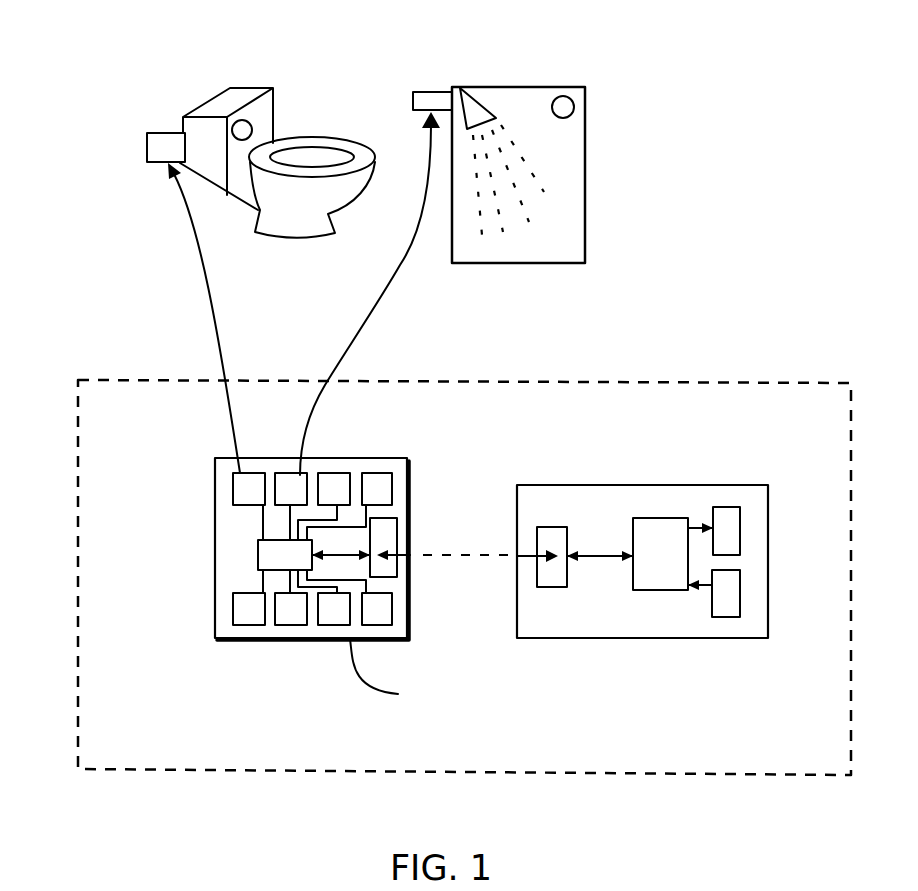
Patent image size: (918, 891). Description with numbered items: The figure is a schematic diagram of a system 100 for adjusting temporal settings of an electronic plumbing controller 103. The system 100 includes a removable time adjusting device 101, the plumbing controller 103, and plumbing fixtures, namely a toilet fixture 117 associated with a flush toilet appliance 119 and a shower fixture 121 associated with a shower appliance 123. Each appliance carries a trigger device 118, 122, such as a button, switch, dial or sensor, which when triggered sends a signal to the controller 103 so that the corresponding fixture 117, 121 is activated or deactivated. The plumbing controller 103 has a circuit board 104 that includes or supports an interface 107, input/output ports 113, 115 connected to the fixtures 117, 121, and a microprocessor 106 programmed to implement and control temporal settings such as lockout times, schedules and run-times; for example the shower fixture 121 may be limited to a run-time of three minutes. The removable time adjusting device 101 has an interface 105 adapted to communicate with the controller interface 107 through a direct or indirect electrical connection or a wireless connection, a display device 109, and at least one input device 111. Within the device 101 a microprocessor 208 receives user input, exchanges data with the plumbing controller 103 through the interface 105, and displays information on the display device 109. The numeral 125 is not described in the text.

The system 100 is at (750, 219).
The removable time adjusting device 101 is at (680, 587).
The electronic plumbing controller 103 is at (305, 607).
The circuit board 104 is at (224, 616).
The interface 105 is at (551, 538).
The microprocessor 106 is at (267, 563).
The interface 107 is at (386, 540).
The display device 109 is at (741, 528).
The input device 111 is at (741, 592).
The input/output port 113 is at (233, 494).
The input/output port 115 is at (283, 506).
The toilet fixture 117 is at (148, 163).
The trigger device 118 is at (252, 125).
The flush toilet appliance 119 is at (273, 88).
The shower fixture 121 is at (427, 92).
The trigger device 122 is at (575, 100).
The shower appliance 123 is at (585, 164).
The building enclosure 125 is at (722, 776).
The microprocessor 208 is at (660, 554).